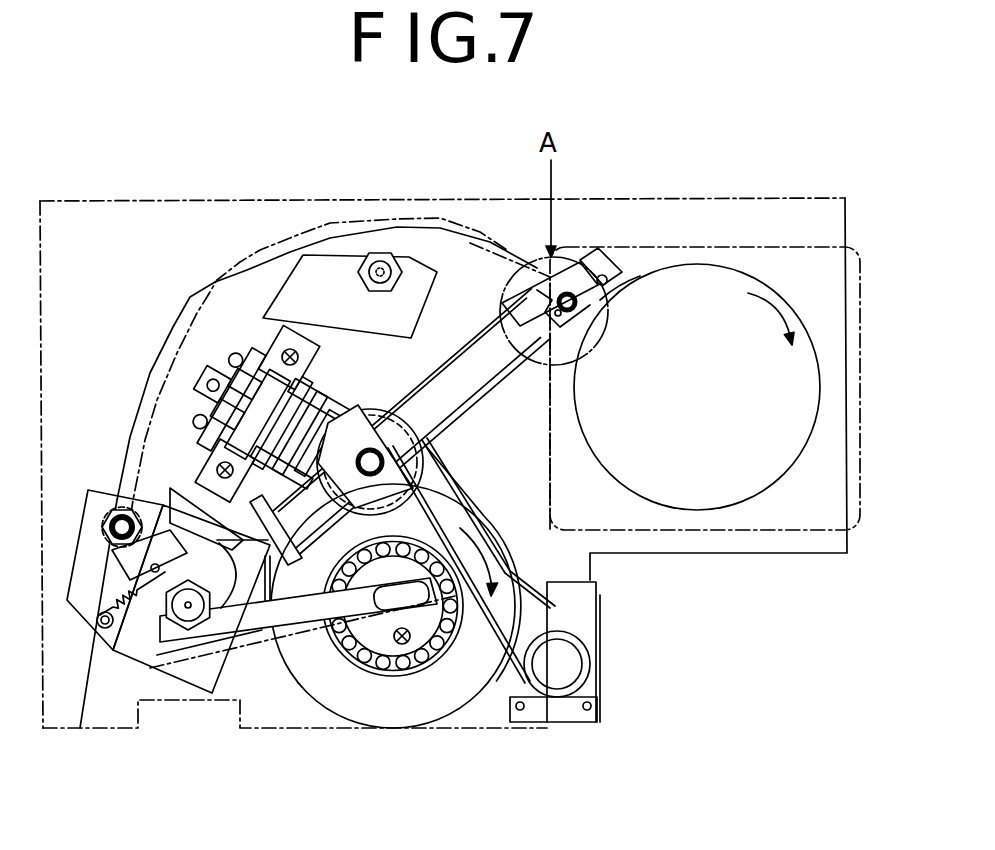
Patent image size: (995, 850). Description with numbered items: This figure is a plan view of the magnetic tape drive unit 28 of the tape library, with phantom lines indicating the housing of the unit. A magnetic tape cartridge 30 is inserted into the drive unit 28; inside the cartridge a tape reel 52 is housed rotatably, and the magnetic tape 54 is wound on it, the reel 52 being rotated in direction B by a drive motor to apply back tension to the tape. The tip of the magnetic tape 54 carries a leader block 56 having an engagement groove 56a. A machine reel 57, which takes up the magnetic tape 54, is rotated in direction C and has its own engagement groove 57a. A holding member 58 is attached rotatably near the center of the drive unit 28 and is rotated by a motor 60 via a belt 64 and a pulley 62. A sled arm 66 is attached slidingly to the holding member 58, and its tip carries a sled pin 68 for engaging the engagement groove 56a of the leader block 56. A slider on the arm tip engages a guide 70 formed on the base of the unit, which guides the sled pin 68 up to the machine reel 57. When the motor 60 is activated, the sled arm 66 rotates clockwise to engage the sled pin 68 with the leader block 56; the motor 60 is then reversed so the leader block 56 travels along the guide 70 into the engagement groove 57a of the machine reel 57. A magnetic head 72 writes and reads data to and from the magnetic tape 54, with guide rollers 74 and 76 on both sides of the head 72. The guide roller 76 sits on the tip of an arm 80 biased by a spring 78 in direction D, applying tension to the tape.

The magnetic tape drive unit 28 is at (706, 184).
The magnetic tape cartridge 30 is at (740, 527).
The tape reel 52 is at (778, 480).
The magnetic tape 54 is at (635, 277).
The leader block 56 is at (600, 262).
The engagement groove 56a is at (577, 322).
The machine reel 57 is at (368, 713).
The engagement groove 57a is at (412, 655).
The holding member 58 is at (355, 425).
The motor 60 is at (557, 682).
The pulley 62 is at (422, 465).
The belt 64 is at (565, 616).
The sled arm 66 is at (470, 343).
The sled pin 68 is at (578, 340).
The guide 70 is at (190, 303).
The magnetic head 72 is at (207, 403).
The guide roller 74 is at (377, 255).
The guide roller 76 is at (214, 692).
The spring 78 is at (105, 628).
The arm 80 is at (150, 640).